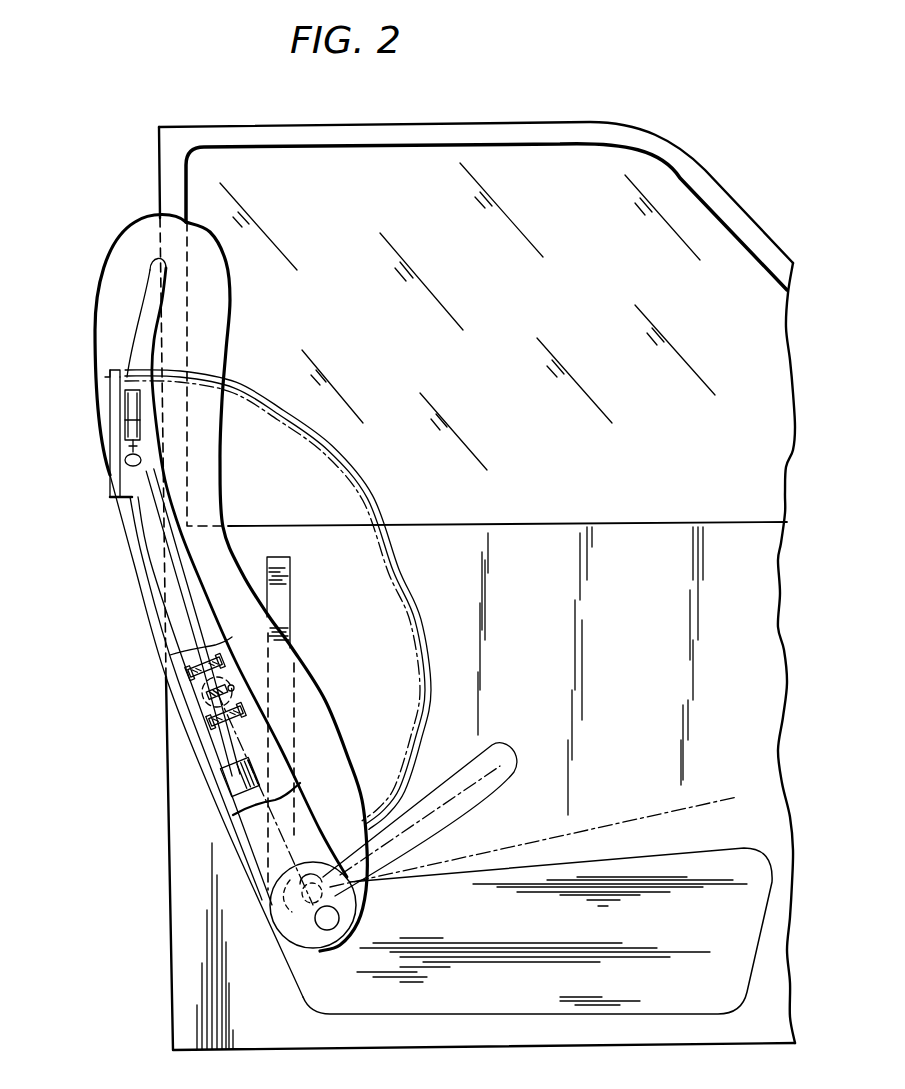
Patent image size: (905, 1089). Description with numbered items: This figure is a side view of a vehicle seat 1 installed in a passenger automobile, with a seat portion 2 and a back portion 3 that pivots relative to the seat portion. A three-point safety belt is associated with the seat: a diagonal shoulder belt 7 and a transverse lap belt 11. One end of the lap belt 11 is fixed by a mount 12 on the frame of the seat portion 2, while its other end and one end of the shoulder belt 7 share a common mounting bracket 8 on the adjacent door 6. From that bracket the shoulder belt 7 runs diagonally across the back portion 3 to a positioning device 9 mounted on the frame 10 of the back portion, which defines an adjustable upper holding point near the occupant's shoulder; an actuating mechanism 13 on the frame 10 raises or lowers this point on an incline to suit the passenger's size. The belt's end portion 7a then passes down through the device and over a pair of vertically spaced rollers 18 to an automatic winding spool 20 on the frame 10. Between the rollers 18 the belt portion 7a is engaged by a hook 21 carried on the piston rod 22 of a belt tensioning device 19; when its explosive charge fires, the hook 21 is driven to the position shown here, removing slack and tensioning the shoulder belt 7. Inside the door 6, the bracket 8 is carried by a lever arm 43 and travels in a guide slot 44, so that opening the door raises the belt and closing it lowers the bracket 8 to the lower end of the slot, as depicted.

The vehicle seat 1 is at (236, 249).
The seat portion 2 is at (722, 858).
The back portion 3 is at (136, 234).
The door 6 is at (533, 537).
The shoulder belt 7 is at (366, 514).
The end portion of the shoulder belt 7a is at (176, 602).
The mounting bracket 8 is at (302, 906).
The positioning device 9 is at (110, 374).
The frame 10 is at (150, 272).
The lap belt 11 is at (497, 754).
The mount 12 is at (327, 931).
The actuating mechanism 13 is at (126, 418).
The rollers 18 is at (190, 675).
The belt tensioning device 19 is at (205, 695).
The automatic winding spool 20 is at (232, 782).
The hook 21 is at (235, 688).
The piston rod 22 is at (217, 661).
The lever arm 43 is at (634, 814).
The guide slot 44 is at (290, 636).